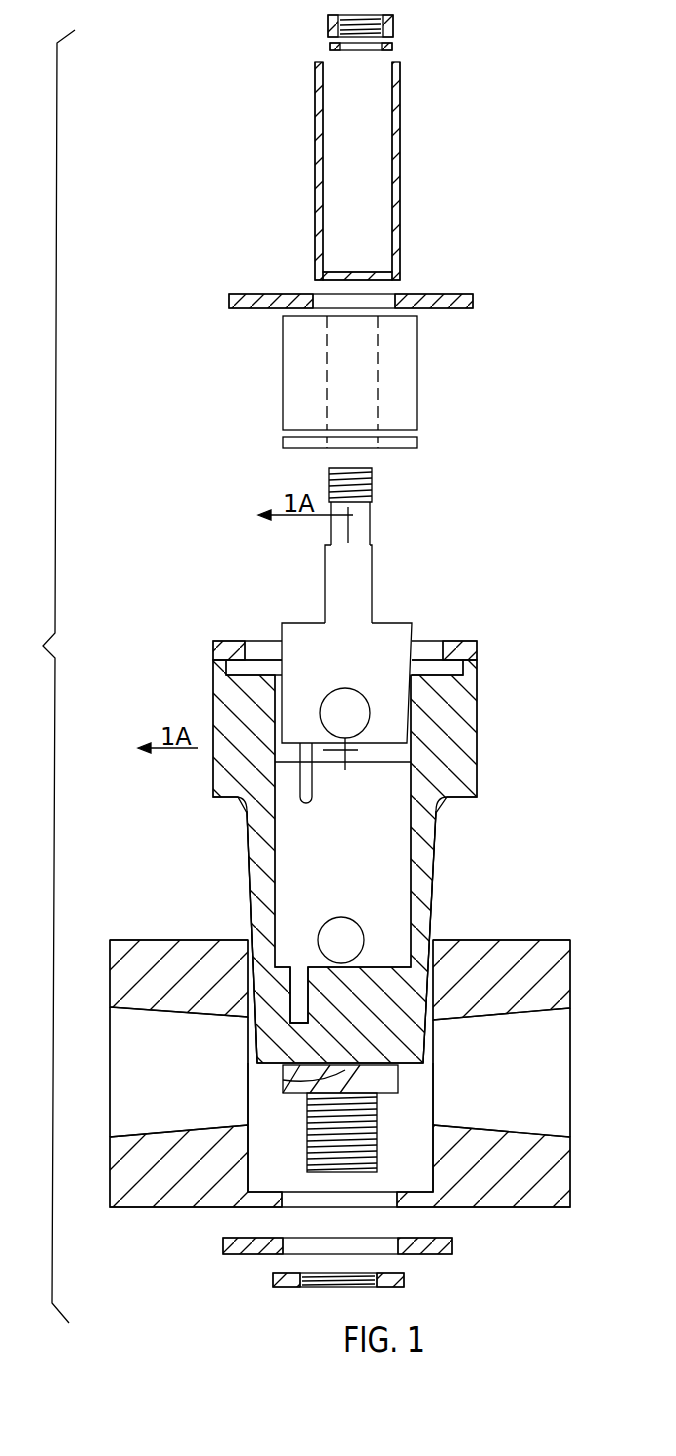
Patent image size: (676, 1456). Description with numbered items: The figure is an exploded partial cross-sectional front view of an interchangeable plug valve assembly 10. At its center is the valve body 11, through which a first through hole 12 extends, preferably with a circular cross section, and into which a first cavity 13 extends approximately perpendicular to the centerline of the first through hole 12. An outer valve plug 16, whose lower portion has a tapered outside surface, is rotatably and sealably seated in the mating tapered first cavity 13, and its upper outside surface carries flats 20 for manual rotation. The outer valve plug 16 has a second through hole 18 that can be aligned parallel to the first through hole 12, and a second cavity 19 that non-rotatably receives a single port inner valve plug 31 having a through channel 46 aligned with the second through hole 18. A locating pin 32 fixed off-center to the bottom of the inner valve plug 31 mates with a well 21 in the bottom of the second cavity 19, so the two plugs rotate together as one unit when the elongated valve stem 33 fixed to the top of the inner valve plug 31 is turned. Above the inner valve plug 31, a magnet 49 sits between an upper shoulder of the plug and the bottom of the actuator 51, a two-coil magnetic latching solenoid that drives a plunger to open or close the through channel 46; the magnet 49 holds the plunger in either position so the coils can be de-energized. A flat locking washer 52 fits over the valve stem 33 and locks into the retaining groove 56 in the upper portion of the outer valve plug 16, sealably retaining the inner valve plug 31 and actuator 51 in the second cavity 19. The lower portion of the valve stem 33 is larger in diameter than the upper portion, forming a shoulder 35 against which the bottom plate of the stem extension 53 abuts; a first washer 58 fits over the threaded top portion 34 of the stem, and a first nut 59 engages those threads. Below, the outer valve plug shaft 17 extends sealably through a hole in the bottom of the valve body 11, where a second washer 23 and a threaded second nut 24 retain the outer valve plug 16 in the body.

The interchangeable plug valve assembly 10 is at (134, 650).
The valve body 11 is at (555, 966).
The first through hole 12 is at (135, 1030).
The first cavity 13 is at (407, 1179).
The outer valve plug 16 is at (262, 905).
The outer valve plug shaft 17 is at (320, 1148).
The second through hole 18 is at (352, 931).
The second cavity 19 is at (393, 837).
The flats 20 is at (477, 722).
The well 21 is at (300, 987).
The second washer 23 is at (233, 1248).
The second nut 24 is at (287, 1287).
The inner valve plug 31 is at (400, 655).
The locating pin 32 is at (290, 622).
The valve stem 33 is at (337, 573).
The threaded top portion 34 is at (331, 482).
The shoulder 35 is at (370, 541).
The through channel 46 is at (340, 715).
The magnet 49 is at (410, 443).
The actuator 51 is at (406, 380).
The flat locking washer 52 is at (473, 300).
The stem extension 53 is at (400, 161).
The retaining groove 56 is at (458, 670).
The first washer 58 is at (392, 46).
The first nut 59 is at (393, 26).